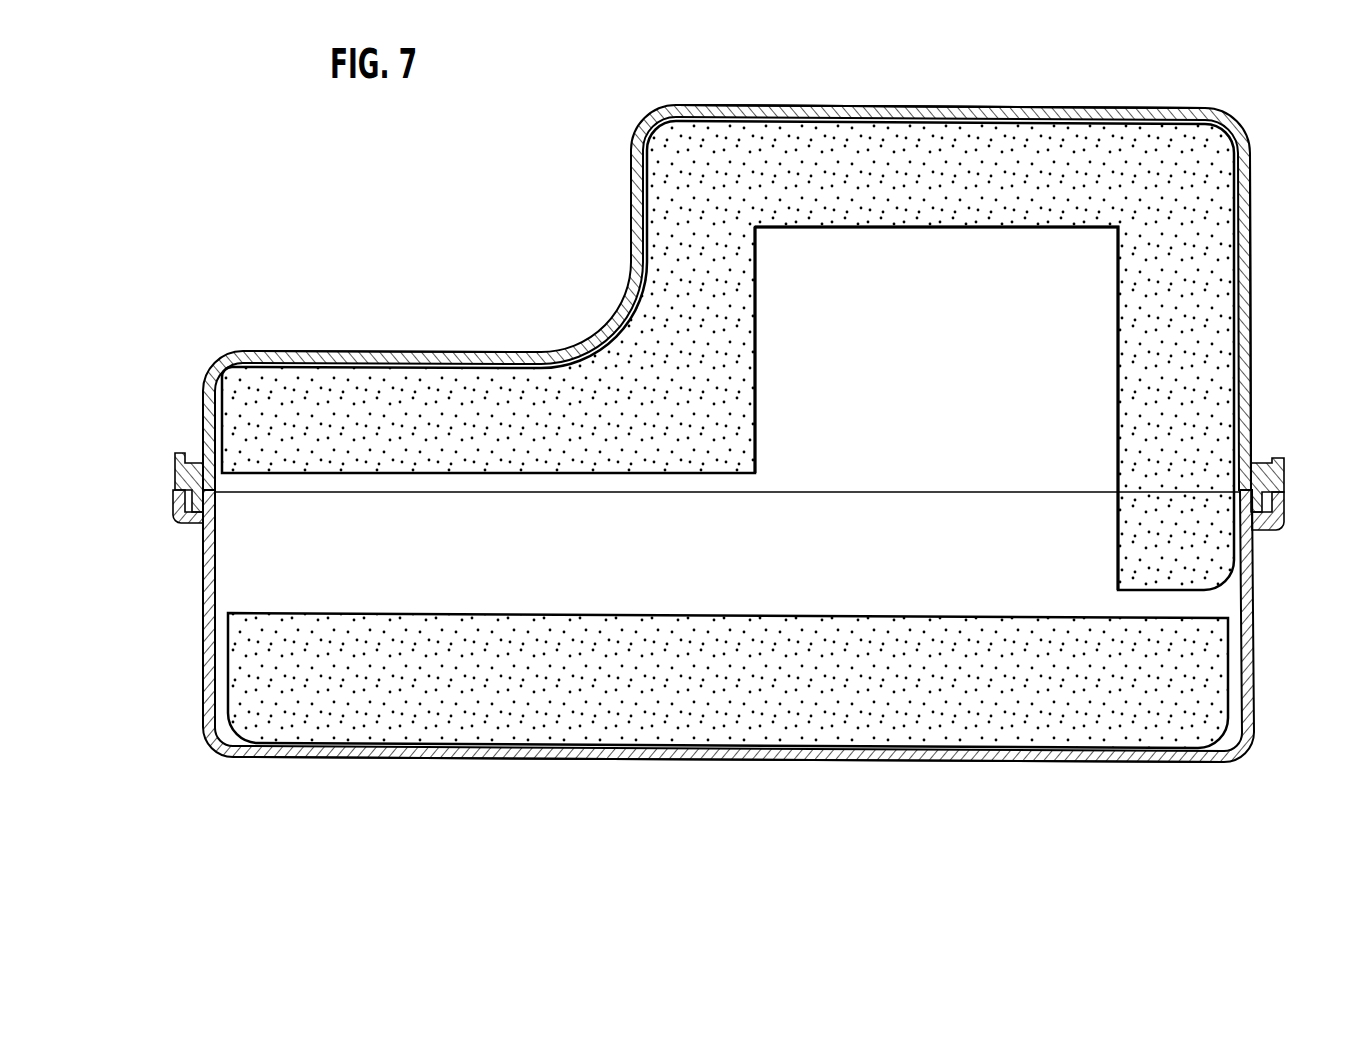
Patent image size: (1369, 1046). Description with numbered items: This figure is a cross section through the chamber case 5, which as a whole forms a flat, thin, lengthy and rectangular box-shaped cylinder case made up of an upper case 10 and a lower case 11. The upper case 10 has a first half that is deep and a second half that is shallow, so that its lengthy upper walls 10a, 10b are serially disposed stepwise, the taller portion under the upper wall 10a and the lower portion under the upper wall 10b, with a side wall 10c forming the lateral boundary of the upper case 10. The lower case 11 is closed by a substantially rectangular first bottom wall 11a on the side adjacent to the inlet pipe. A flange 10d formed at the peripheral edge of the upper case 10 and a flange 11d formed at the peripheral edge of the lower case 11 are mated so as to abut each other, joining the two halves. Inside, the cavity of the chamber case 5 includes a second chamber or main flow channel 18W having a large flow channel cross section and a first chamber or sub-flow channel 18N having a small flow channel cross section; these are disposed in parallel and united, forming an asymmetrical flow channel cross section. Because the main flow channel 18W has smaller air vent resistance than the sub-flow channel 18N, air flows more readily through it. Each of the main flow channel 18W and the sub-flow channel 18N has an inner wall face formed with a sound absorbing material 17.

The chamber case 5 is at (832, 89).
The upper case 10 is at (626, 191).
The upper wall 10a is at (1030, 107).
The upper wall 10b is at (410, 352).
The side wall 10c is at (203, 412).
The flange 10d is at (175, 478).
The lower case 11 is at (591, 762).
The first bottom wall 11a is at (770, 755).
The flange 11d is at (175, 508).
The sound absorbing material 17 is at (340, 385).
The main flow channel 18W is at (1020, 406).
The sub-flow channel 18N is at (484, 569).